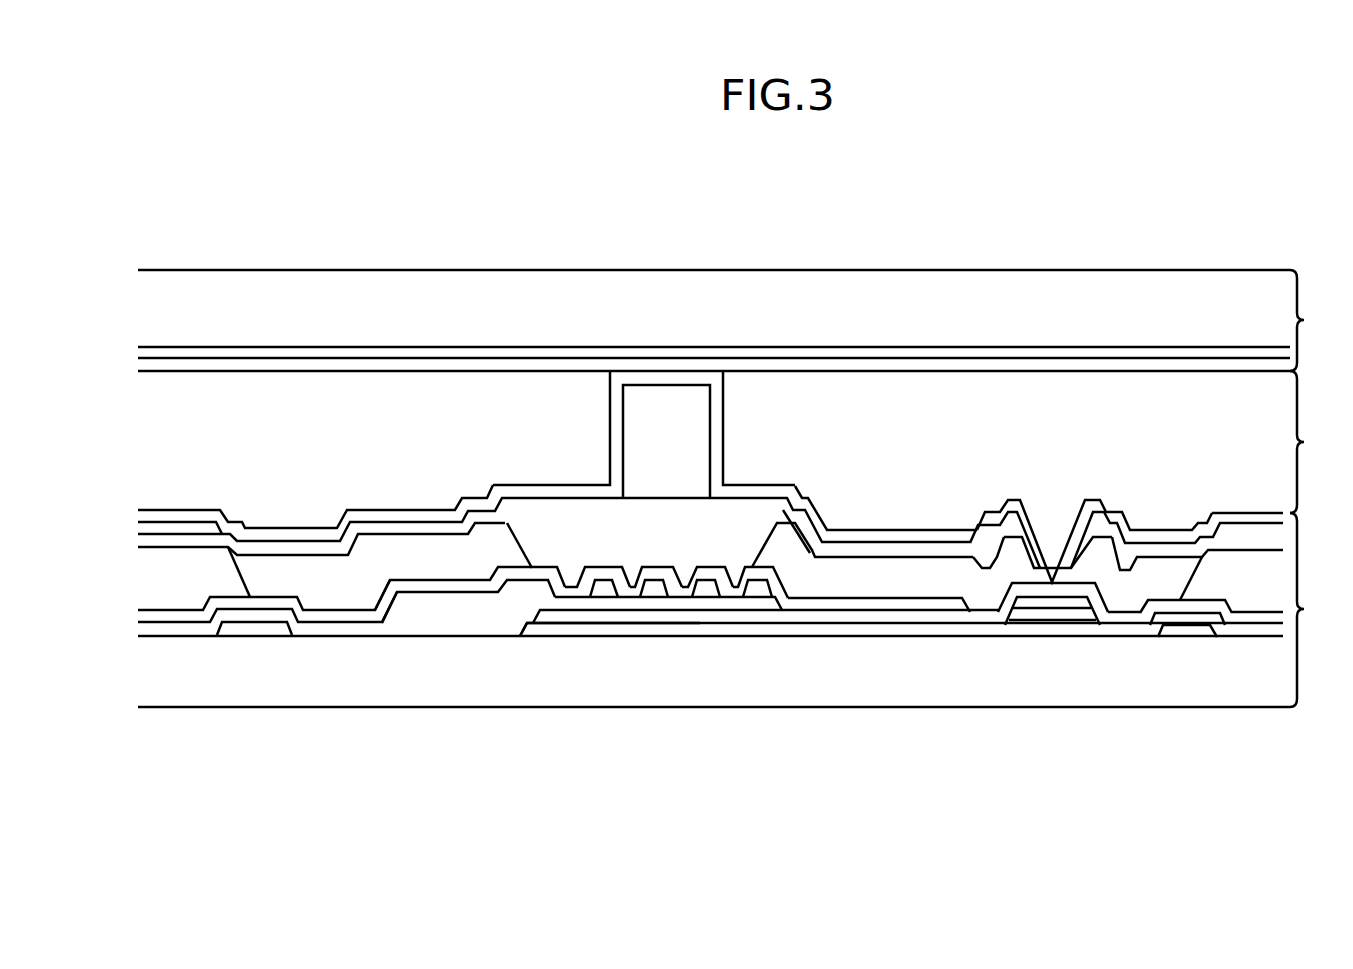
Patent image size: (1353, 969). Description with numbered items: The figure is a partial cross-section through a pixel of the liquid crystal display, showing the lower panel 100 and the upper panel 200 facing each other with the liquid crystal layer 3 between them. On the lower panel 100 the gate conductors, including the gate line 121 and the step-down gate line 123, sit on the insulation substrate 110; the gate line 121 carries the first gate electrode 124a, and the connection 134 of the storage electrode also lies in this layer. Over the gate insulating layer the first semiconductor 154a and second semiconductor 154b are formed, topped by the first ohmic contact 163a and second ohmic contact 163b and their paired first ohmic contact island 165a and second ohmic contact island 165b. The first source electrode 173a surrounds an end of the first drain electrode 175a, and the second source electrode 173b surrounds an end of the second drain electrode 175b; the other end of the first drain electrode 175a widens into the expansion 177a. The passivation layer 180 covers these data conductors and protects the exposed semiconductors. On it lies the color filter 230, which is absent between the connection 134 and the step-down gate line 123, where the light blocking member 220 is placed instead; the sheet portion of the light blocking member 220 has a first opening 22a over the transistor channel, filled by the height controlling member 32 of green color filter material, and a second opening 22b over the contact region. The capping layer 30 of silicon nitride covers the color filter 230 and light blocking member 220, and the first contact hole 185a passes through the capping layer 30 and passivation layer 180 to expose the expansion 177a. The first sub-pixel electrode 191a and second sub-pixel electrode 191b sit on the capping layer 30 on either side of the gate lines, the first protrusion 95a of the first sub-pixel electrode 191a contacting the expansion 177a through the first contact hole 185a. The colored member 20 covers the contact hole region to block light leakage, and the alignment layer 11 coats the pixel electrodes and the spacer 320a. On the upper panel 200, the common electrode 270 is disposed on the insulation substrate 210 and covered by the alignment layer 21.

The liquid crystal layer 3 is at (1308, 442).
The alignment layer 11 is at (718, 388).
The colored member 20 is at (1047, 528).
The alignment layer 21 is at (1150, 372).
The first opening 22a is at (520, 543).
The second opening 22b is at (1018, 553).
The capping layer 30 is at (868, 553).
The height controlling member 32 is at (742, 523).
The first protrusion 95a is at (1078, 570).
The lower panel 100 is at (1317, 610).
The insulation substrate 110 is at (224, 688).
The gate line 121 is at (927, 632).
The step-down gate line 123 is at (268, 628).
The first gate electrode 124a is at (558, 633).
The connection of the storage electrode 134 is at (1188, 632).
The first semiconductor 154a is at (543, 603).
The second semiconductor 154b is at (721, 603).
The first ohmic contact 163a is at (433, 607).
The second ohmic contact 163b is at (650, 595).
The first ohmic contact island 165a is at (597, 593).
The second ohmic contact island 165b is at (700, 595).
The first source electrode 173a is at (412, 598).
The second source electrode 173b is at (658, 587).
The first drain electrode 175a is at (607, 587).
The second drain electrode 175b is at (710, 587).
The expansion 177a is at (1073, 600).
The passivation layer 180 is at (847, 605).
The first contact hole 185a is at (1056, 555).
The first sub-pixel electrode 191a is at (1237, 527).
The second sub-pixel electrode 191b is at (187, 525).
The upper panel 200 is at (1317, 320).
The insulation substrate 210 is at (878, 300).
The light blocking member 220 is at (325, 587).
The color filter 230 is at (173, 585).
The common electrode 270 is at (943, 358).
The spacer 320a is at (695, 420).